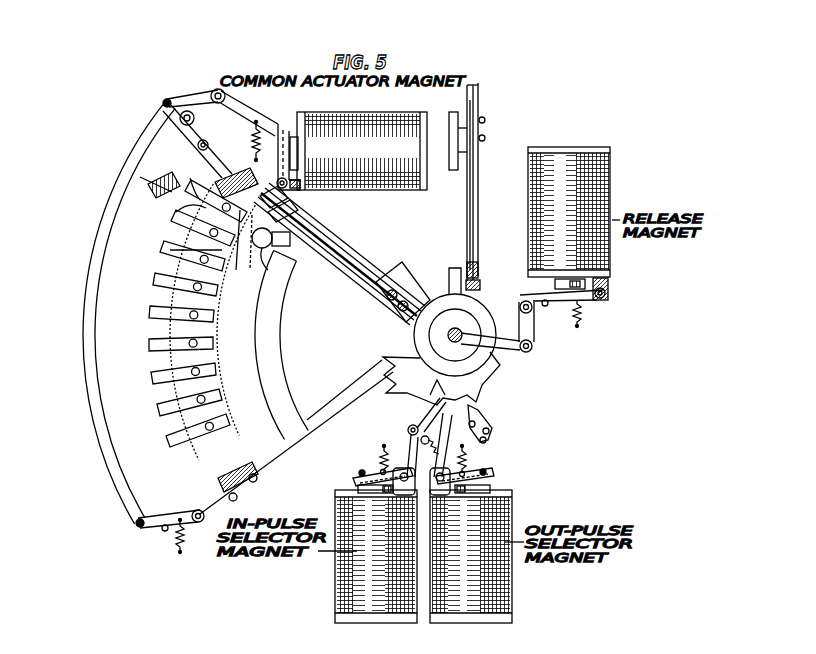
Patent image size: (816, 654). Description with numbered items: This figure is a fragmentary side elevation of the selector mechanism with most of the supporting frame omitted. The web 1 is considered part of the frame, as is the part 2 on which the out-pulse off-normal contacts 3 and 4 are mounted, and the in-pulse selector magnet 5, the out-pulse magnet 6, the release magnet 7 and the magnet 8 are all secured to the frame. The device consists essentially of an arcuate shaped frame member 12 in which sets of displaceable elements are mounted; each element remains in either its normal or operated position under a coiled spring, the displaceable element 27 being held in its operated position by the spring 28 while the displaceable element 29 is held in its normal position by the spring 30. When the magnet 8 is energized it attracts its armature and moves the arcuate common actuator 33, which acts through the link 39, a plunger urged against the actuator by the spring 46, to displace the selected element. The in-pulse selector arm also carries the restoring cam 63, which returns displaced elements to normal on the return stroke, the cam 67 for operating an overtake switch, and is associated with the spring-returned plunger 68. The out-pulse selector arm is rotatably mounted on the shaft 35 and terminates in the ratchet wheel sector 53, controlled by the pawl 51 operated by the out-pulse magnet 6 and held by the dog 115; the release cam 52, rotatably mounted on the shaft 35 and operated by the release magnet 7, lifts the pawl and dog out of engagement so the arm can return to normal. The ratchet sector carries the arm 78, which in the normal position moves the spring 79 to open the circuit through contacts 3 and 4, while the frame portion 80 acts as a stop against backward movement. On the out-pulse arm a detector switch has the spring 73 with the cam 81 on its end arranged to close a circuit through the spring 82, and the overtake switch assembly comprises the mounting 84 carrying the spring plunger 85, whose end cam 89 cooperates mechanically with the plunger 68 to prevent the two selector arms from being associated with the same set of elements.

The web 1 is at (283, 390).
The frame part 2 is at (453, 118).
The out-pulse off-normal contact 3 is at (477, 173).
The out-pulse off-normal contact 4 is at (478, 193).
The in-pulse selector magnet 5 is at (362, 605).
The out-pulse magnet 6 is at (464, 605).
The release magnet 7 is at (610, 198).
The magnet 8 is at (373, 112).
The arcuate shaped frame member 12 is at (196, 466).
The displaceable element 27 is at (200, 208).
The spring 28 is at (228, 186).
The displaceable element 29 is at (170, 262).
The spring 30 is at (187, 250).
The arcuate common actuator 33 is at (120, 178).
The shaft 35 is at (463, 340).
The link 39 is at (163, 189).
The spring 46 is at (166, 196).
The pawl 51 is at (438, 415).
The release cam 52 is at (425, 405).
The ratchet wheel sector 53 is at (417, 380).
The cam 63 is at (251, 270).
The cam 67 is at (197, 193).
The plunger 68 is at (236, 268).
The spring 73 is at (276, 208).
The arm 78 is at (450, 273).
The spring 79 is at (466, 207).
The frame portion 80 is at (476, 282).
The cam 81 is at (272, 192).
The spring 82 is at (283, 217).
The mounting 84 is at (330, 277).
The spring plunger 85 is at (262, 248).
The cam 89 is at (274, 238).
The dog 115 is at (483, 413).